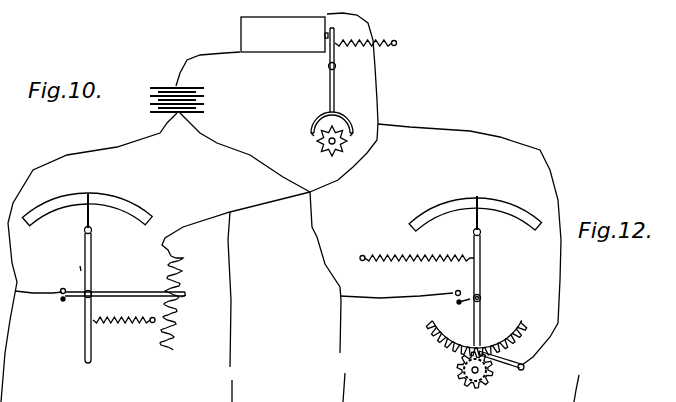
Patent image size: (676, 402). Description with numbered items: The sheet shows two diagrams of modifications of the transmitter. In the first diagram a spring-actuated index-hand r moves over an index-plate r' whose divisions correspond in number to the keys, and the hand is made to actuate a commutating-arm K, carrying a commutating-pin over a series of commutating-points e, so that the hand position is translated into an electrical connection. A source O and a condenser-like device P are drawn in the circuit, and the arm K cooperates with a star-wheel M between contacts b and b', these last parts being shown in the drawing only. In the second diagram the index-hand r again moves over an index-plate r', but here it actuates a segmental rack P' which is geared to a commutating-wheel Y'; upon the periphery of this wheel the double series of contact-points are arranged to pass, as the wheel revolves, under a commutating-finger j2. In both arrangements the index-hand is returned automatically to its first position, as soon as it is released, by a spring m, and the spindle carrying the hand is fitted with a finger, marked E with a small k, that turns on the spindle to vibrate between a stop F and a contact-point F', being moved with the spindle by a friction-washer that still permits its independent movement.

In FIG. 10, the battery or source O is at (284, 34).
In FIG. 10, the condenser or plates P is at (161, 97).
In FIG. 10, the commutating-arm K is at (330, 76).
In FIG. 10, the star wheel M is at (330, 147).
In FIG. 10, the contact b is at (302, 137).
In FIG. 10, the contact b' is at (360, 135).
In FIG. 10, the index-plate r' is at (87, 202).
In FIG. 12, the index-plate r' is at (475, 212).
In FIG. 10, the index-hand r is at (92, 278).
In FIG. 12, the index-hand r is at (486, 271).
In FIG. 10, the pivot E is at (82, 272).
In FIG. 12, the pivot E is at (467, 283).
In FIG. 10, the mark k is at (81, 267).
In FIG. 10, the contact-point F' is at (53, 282).
In FIG. 12, the contact-point F' is at (446, 285).
In FIG. 10, the stop F is at (54, 310).
In FIG. 12, the stop F is at (455, 309).
In FIG. 10, the spring m is at (124, 312).
In FIG. 12, the spring m is at (417, 251).
In FIG. 10, the commutating-points e is at (174, 304).
In FIG. 12, the segmental rack P' is at (476, 338).
In FIG. 12, the commutating-wheel Y' is at (462, 374).
In FIG. 12, the commutating-finger j2 is at (504, 364).